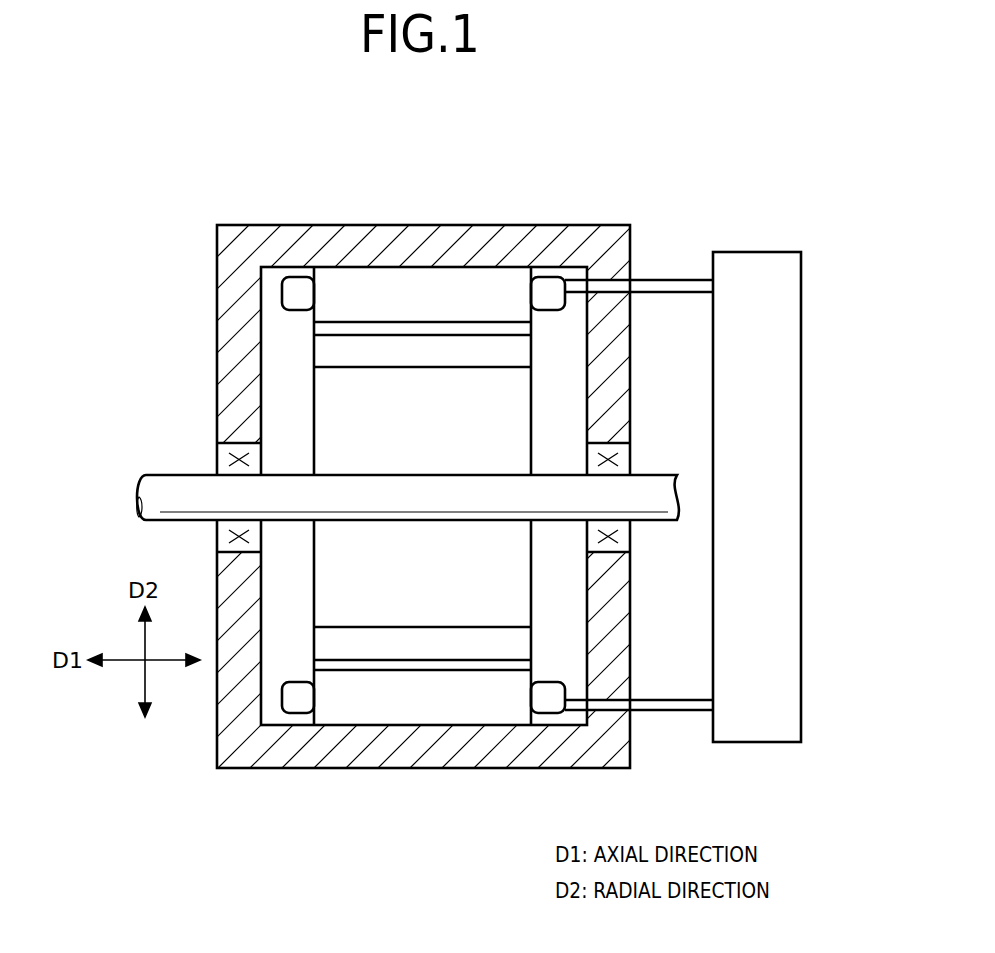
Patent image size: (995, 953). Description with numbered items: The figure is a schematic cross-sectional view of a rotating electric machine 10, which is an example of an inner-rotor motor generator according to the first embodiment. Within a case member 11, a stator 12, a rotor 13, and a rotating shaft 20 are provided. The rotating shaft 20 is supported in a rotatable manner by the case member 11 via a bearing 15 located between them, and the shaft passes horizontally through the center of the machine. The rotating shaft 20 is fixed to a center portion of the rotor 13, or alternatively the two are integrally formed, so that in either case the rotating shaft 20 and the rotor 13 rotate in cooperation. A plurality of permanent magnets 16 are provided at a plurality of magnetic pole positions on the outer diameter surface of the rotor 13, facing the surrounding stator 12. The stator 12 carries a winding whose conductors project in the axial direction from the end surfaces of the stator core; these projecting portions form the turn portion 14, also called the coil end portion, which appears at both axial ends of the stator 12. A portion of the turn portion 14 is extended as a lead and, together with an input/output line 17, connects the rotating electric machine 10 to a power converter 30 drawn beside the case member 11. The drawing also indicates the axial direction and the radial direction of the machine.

The rotating electric machine 10 is at (200, 190).
The case member 11 is at (274, 250).
The stator 12 is at (360, 285).
The rotor 13 is at (400, 390).
The turn portion 14 is at (297, 286).
The bearing 15 is at (244, 455).
The permanent magnet 16 is at (473, 350).
The input/output line 17 is at (680, 288).
The rotating shaft 20 is at (183, 500).
The power converter 30 is at (801, 310).